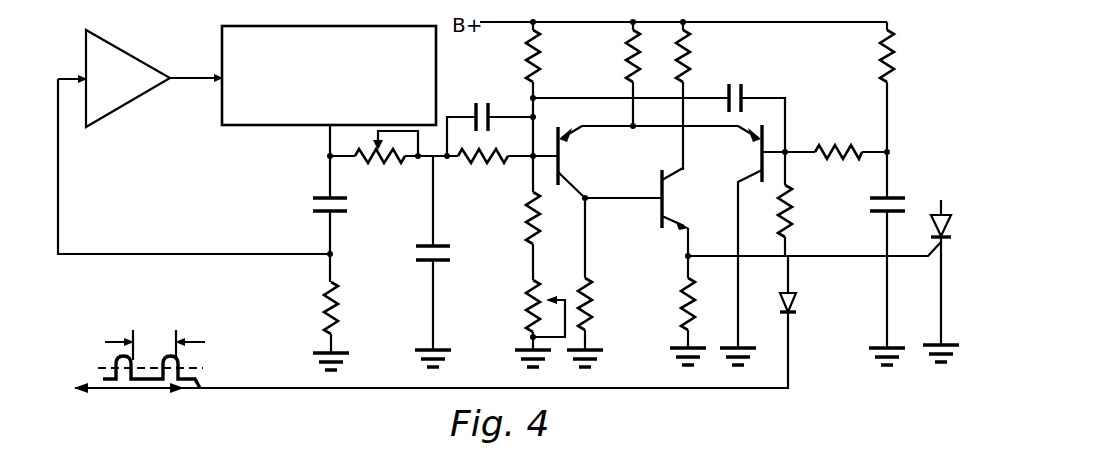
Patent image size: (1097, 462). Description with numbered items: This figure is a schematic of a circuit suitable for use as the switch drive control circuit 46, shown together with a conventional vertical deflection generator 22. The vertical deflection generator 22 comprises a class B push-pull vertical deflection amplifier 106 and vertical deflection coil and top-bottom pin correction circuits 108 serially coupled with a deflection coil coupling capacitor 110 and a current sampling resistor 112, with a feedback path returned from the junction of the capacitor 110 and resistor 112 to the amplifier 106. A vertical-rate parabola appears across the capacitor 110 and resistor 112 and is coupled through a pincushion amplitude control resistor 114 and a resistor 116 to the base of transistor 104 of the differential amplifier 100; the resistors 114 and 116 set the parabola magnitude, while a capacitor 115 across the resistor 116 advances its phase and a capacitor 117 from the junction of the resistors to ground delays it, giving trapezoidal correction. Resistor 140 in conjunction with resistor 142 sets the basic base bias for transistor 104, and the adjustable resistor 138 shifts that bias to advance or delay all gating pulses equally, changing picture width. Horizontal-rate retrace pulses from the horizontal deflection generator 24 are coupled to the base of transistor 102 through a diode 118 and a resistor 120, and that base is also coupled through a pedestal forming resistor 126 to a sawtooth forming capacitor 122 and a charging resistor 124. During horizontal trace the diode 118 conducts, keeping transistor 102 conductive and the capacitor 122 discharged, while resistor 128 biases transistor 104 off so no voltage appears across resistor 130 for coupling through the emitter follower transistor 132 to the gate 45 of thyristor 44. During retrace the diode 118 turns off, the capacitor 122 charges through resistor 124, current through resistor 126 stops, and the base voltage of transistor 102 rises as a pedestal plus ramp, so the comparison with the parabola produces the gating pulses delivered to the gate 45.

The vertical deflection amplifier 106 is at (134, 59).
The vertical deflection generator 22 is at (95, 103).
The vertical deflection coil and top-bottom pin correction circuits 108 is at (262, 125).
The deflection coil coupling capacitor 110 is at (310, 209).
The current sampling resistor 112 is at (338, 300).
The pincushion amplitude control resistor 114 is at (394, 162).
The capacitor 115 is at (488, 101).
The resistor 116 is at (479, 160).
The capacitor 117 is at (419, 248).
The resistor 140 is at (525, 216).
The resistor 138 is at (526, 300).
The resistor 142 is at (524, 55).
The switch drive control circuit 46 is at (600, 59).
The resistor 128 is at (632, 60).
The transistor 104 is at (598, 169).
The differential amplifier 100 is at (650, 169).
The resistor 130 is at (589, 302).
The emitter follower transistor 132 is at (705, 209).
The transistor 102 is at (755, 169).
The resistor 120 is at (793, 214).
The diode 118 is at (798, 304).
The pedestal forming resistor 126 is at (844, 146).
The charging resistor 124 is at (878, 55).
The sawtooth forming capacitor 122 is at (868, 213).
The thyristor 44 is at (933, 207).
The gate 45 is at (938, 254).
The horizontal deflection generator 24 is at (177, 359).